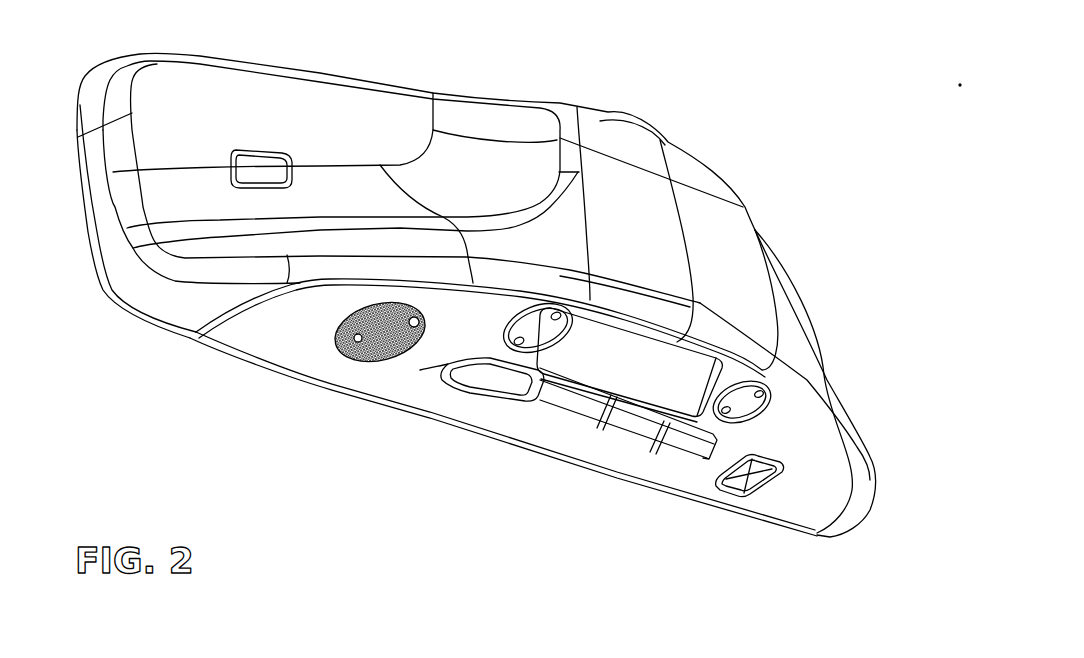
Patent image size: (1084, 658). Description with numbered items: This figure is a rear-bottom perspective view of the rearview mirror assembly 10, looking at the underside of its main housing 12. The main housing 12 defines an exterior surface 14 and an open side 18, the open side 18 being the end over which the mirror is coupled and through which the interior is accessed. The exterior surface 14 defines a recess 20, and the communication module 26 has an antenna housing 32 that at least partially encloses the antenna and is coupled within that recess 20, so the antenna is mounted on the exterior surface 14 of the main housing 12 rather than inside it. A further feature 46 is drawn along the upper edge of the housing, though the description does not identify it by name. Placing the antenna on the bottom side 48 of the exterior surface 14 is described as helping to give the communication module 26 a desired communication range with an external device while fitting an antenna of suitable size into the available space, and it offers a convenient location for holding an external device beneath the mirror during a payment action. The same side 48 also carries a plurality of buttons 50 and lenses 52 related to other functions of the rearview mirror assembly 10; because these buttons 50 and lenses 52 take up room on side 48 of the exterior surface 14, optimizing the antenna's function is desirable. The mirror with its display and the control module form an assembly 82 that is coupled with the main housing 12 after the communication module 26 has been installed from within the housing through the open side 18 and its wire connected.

The rearview mirror assembly 10 is at (738, 137).
The main housing 12 is at (298, 93).
The exterior surface 14 is at (290, 342).
The open side 18 is at (113, 290).
The recess 20 is at (533, 357).
The communication module 26 is at (695, 360).
The antenna housing 32 is at (590, 430).
The tab 46 is at (637, 113).
The side 48 is at (420, 373).
The buttons 50 is at (487, 388).
The lenses 52 is at (533, 317).
The assembly 82 is at (86, 251).